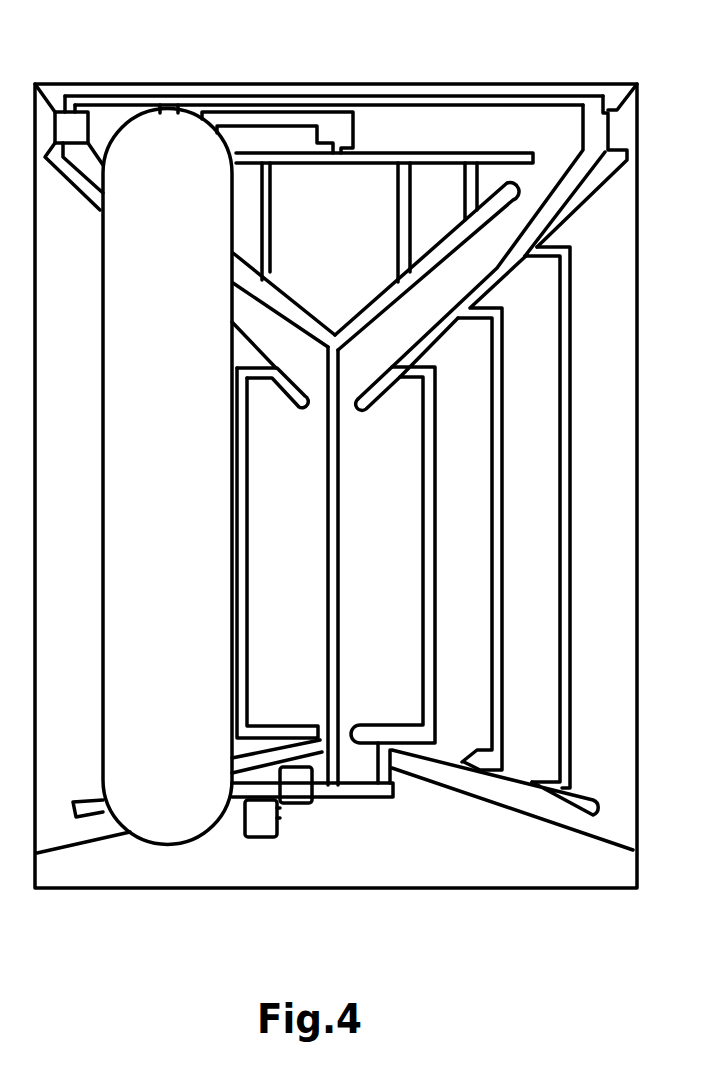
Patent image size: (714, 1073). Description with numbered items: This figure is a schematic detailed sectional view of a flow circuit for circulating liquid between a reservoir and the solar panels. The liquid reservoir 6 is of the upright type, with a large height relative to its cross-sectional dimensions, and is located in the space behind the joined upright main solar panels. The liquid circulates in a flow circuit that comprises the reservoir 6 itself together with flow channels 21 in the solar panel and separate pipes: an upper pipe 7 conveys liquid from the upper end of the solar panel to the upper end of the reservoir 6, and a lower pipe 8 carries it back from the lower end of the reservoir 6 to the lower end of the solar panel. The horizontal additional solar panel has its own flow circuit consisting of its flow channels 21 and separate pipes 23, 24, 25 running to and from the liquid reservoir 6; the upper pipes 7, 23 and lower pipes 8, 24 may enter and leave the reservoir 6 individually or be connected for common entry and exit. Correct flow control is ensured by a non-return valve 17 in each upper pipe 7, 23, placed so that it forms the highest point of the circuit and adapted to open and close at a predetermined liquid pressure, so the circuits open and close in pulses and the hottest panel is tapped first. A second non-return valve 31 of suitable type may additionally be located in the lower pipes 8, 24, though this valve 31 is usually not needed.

The liquid reservoir 6 is at (188, 536).
The upper pipe 7 is at (163, 97).
The lower pipe 8 is at (363, 795).
The non-return valve 17 is at (605, 125).
The flow channels 21 is at (272, 212).
The upper pipe 23 is at (388, 160).
The lower pipe 24 is at (312, 818).
The pipe 25 is at (338, 552).
The second non-return valve 31 is at (258, 826).